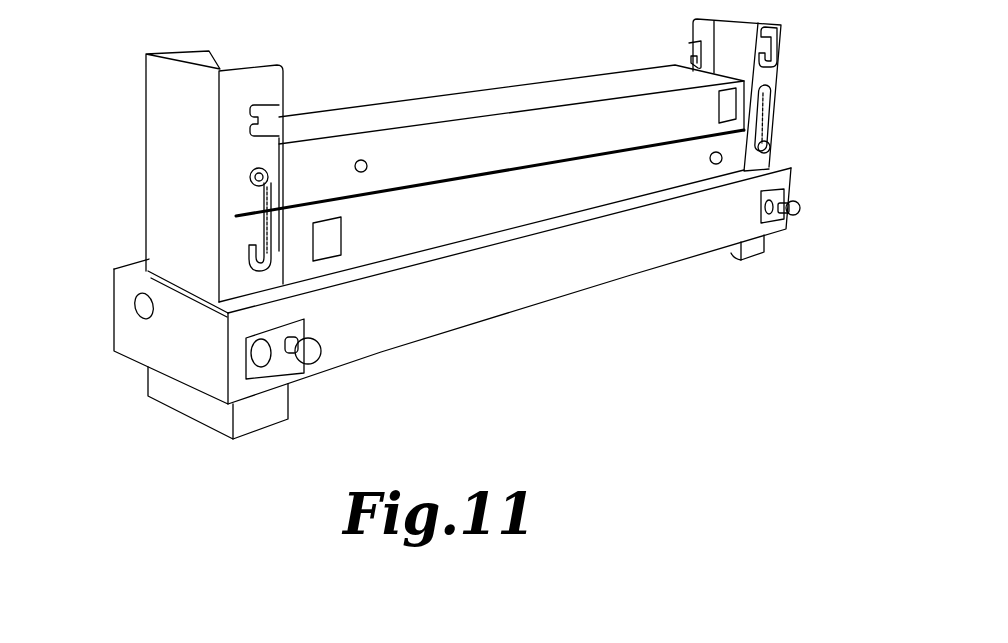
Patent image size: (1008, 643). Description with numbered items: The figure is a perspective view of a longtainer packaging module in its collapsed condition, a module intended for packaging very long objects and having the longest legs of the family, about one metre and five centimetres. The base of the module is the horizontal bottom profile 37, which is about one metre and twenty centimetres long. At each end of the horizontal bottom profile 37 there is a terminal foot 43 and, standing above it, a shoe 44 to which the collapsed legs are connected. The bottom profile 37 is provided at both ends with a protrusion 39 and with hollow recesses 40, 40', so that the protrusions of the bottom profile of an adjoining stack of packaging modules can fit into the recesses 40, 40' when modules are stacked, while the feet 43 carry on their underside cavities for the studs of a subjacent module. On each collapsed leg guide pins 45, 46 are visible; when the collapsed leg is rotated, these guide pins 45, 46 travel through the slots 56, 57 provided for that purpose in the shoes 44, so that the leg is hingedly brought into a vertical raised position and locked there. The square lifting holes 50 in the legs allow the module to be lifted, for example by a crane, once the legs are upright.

The horizontal bottom profile 37 is at (528, 286).
The protrusion 39 is at (317, 353).
The hollow recess 40 is at (180, 384).
The hollow recess 40' is at (825, 202).
The foot 43 is at (198, 408).
The shoe 44 is at (146, 164).
The guide pin 45 is at (266, 169).
The guide pin 46 is at (363, 160).
The square lifting hole 50 is at (334, 251).
The slot 56 is at (781, 46).
The slot 57 is at (263, 219).